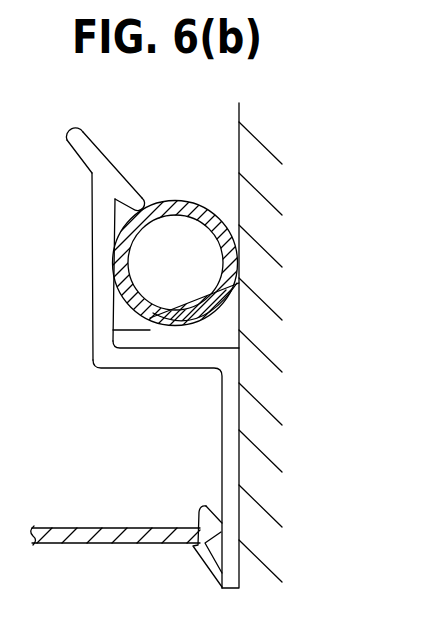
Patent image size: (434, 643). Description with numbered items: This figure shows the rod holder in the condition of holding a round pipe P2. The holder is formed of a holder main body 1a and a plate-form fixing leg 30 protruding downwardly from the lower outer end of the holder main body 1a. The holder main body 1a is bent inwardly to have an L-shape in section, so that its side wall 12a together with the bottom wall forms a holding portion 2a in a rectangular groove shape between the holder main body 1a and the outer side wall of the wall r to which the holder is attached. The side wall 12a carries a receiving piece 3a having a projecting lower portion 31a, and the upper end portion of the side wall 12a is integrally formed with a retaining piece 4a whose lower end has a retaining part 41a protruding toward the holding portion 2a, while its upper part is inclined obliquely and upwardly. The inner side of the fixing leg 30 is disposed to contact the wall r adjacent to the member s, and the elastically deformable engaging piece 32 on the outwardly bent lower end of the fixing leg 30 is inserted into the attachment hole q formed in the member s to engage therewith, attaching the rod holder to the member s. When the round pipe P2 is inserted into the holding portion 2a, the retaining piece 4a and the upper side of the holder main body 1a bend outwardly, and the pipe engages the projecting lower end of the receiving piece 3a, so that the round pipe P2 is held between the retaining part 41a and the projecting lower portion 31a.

The holder main body 1a is at (125, 346).
The side wall 12a is at (100, 243).
The retaining piece 4a is at (115, 180).
The retaining part 41a is at (145, 200).
The round pipe P2 is at (207, 205).
The projecting lower portion 31a is at (239, 283).
The wall r is at (283, 319).
The receiving piece 3a is at (125, 314).
The holding portion 2a is at (125, 343).
The fixing leg 30 is at (230, 443).
The gap q is at (199, 522).
The member s is at (80, 533).
The engaging piece 32 is at (208, 570).